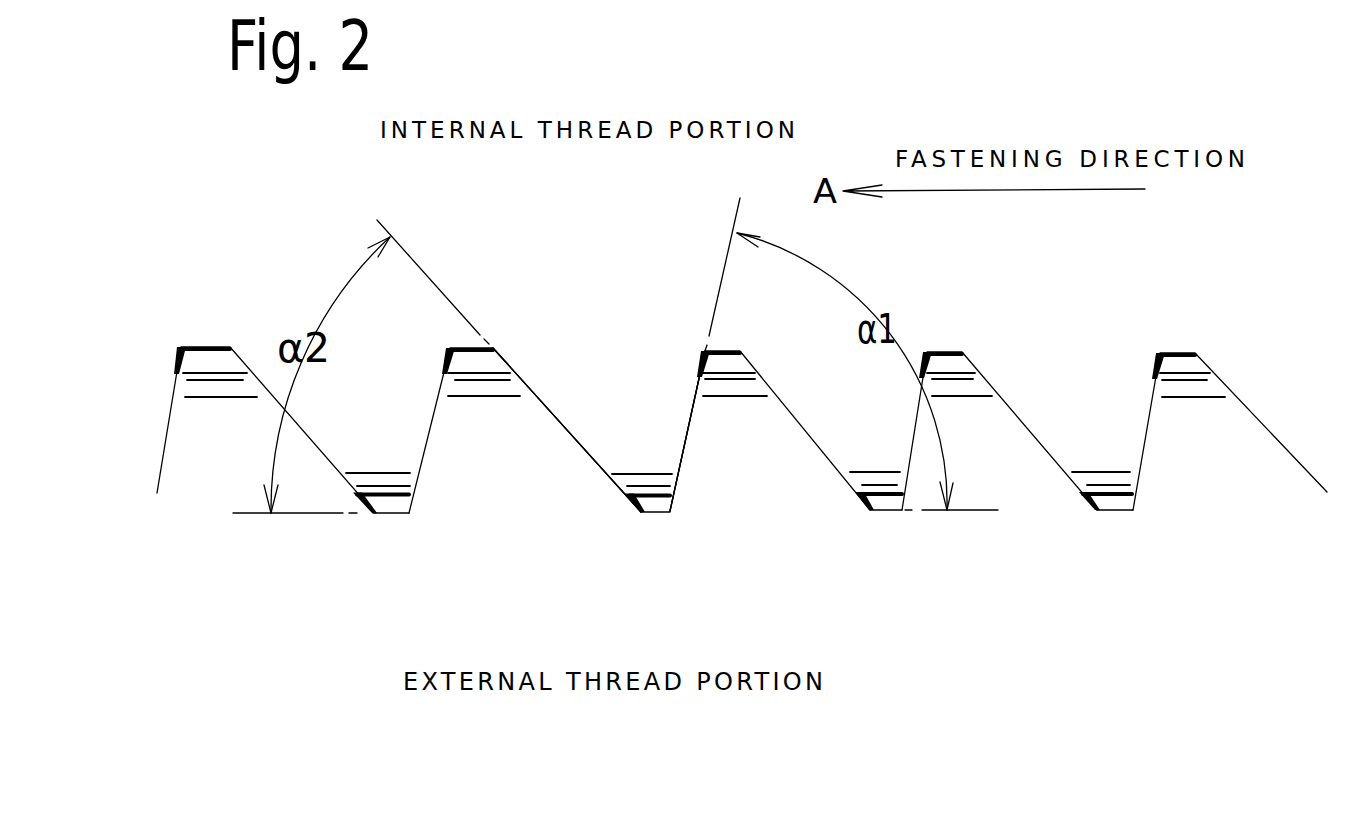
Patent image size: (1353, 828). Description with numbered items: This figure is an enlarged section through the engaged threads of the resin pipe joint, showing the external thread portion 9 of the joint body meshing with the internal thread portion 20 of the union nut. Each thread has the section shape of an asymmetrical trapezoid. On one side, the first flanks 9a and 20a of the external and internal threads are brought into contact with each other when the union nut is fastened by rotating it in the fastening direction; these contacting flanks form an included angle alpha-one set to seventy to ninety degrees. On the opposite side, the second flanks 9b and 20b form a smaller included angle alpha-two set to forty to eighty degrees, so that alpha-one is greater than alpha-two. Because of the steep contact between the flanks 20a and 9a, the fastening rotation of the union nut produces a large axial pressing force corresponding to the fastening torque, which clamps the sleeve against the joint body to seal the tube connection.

The external thread portion 9 is at (333, 697).
The first flank 9a is at (693, 407).
The second flank 9b is at (542, 402).
The internal thread portion 20 is at (320, 145).
The first flank 20a is at (690, 437).
The second flank 20b is at (557, 423).